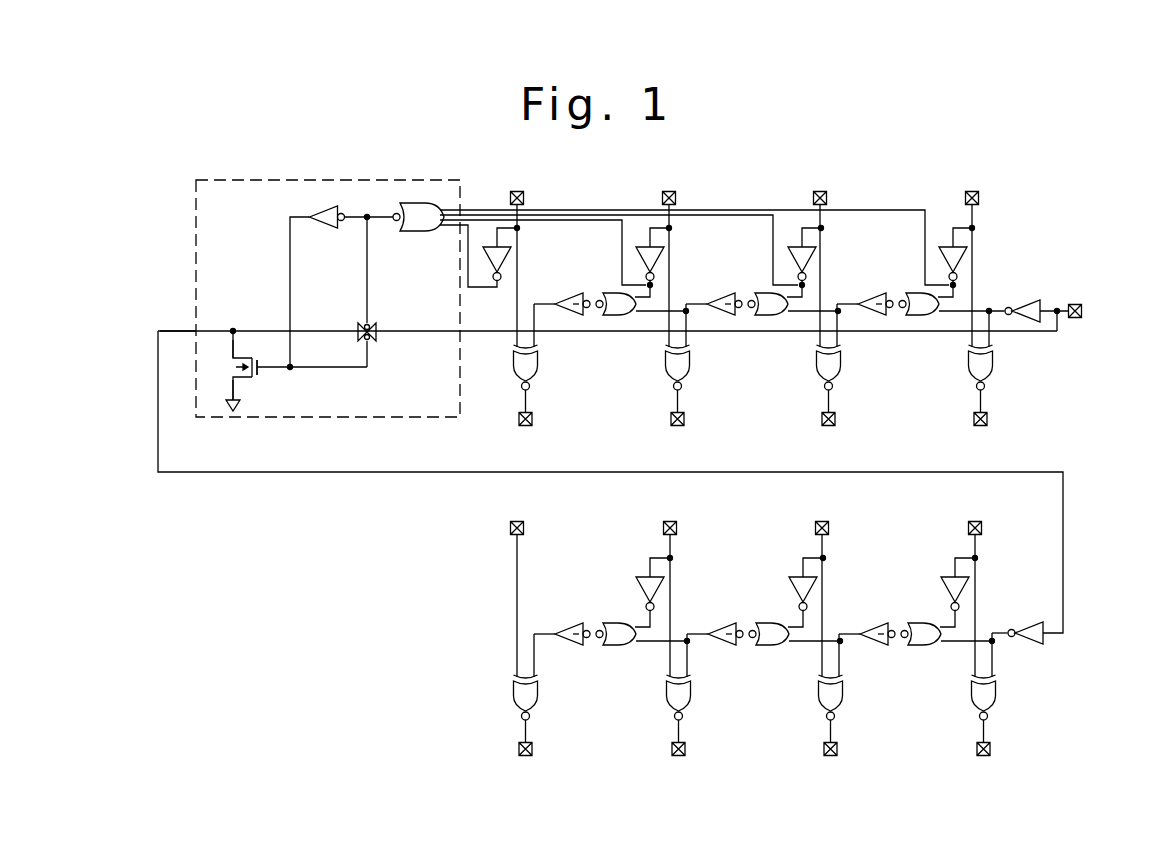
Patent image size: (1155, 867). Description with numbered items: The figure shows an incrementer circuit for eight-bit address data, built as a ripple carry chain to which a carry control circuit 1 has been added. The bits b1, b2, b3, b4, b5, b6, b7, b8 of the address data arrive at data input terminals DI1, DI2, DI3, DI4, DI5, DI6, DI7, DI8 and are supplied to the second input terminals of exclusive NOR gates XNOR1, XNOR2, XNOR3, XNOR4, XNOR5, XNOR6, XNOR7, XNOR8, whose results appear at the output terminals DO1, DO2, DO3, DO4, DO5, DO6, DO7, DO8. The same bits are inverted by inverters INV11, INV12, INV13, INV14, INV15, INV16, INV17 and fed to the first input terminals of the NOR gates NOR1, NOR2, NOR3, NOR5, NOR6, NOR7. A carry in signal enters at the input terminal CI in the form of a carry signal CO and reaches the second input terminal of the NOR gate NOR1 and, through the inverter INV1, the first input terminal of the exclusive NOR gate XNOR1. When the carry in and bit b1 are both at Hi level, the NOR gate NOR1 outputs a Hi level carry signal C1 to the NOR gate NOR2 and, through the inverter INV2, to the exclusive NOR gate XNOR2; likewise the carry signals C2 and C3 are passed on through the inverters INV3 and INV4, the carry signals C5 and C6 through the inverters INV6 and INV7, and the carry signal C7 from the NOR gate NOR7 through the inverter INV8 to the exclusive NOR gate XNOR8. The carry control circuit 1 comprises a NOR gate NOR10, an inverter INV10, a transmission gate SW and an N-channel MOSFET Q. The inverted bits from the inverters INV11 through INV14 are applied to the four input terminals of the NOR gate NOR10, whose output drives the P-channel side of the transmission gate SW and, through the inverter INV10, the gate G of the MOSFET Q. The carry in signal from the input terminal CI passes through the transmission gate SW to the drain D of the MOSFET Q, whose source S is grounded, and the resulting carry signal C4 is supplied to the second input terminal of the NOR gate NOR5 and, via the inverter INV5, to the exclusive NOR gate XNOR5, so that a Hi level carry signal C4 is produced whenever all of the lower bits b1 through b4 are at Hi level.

The carry control circuit 1 is at (390, 180).
The inverter INV1 is at (1027, 299).
The inverter INV2 is at (863, 289).
The inverter INV3 is at (712, 289).
The inverter INV4 is at (567, 293).
The inverter INV5 is at (1022, 618).
The inverter INV6 is at (867, 614).
The inverter INV7 is at (715, 615).
The inverter INV8 is at (559, 615).
The inverter INV10 is at (327, 231).
The inverter INV11 is at (910, 262).
The inverter INV12 is at (759, 262).
The inverter INV13 is at (637, 258).
The inverter INV14 is at (486, 266).
The inverter INV15 is at (924, 583).
The inverter INV16 is at (772, 584).
The inverter INV17 is at (620, 582).
The NOR gate NOR1 is at (945, 339).
The NOR gate NOR2 is at (792, 339).
The NOR gate NOR3 is at (625, 315).
The NOR gate NOR5 is at (946, 670).
The NOR gate NOR6 is at (794, 669).
The NOR gate NOR7 is at (640, 665).
The NOR gate NOR10 is at (417, 231).
The exclusive NOR gate XNOR1 is at (993, 367).
The exclusive NOR gate XNOR2 is at (871, 361).
The exclusive NOR gate XNOR3 is at (720, 361).
The exclusive NOR gate XNOR4 is at (537, 365).
The exclusive NOR gate XNOR5 is at (995, 697).
The exclusive NOR gate XNOR6 is at (874, 695).
The exclusive NOR gate XNOR7 is at (724, 692).
The exclusive NOR gate XNOR8 is at (571, 692).
The carry signal C1 is at (894, 332).
The carry signal C2 is at (740, 332).
The carry signal C3 is at (593, 313).
The carry signal C4 is at (181, 331).
The carry signal C5 is at (886, 662).
The carry signal C6 is at (732, 660).
The carry signal C7 is at (579, 656).
The input terminal CI is at (1082, 311).
The carry signal CO is at (1057, 310).
The data input terminal DI1 is at (978, 194).
The data input terminal DI2 is at (848, 179).
The data input terminal DI3 is at (697, 179).
The data input terminal DI4 is at (523, 194).
The data input terminal DI5 is at (981, 525).
The data input terminal DI6 is at (844, 507).
The data input terminal DI7 is at (698, 508).
The data input terminal DI8 is at (545, 510).
The data output terminal DO1 is at (985, 426).
The data output terminal DO2 is at (848, 438).
The data output terminal DO3 is at (697, 438).
The data output terminal DO4 is at (530, 426).
The data output terminal DO5 is at (988, 757).
The data output terminal DO6 is at (847, 770).
The data output terminal DO7 is at (698, 771).
The data output terminal DO8 is at (548, 771).
The bit b1 is at (965, 258).
The bit b2 is at (814, 258).
The bit b3 is at (663, 258).
The bit b4 is at (511, 258).
The bit b5 is at (965, 587).
The bit b6 is at (813, 587).
The bit b7 is at (664, 588).
The bit b8 is at (511, 588).
The transmission gate SW is at (377, 338).
The N-channel MOSFET Q is at (258, 371).
The drain D is at (223, 350).
The gate G is at (267, 360).
The source S is at (223, 387).